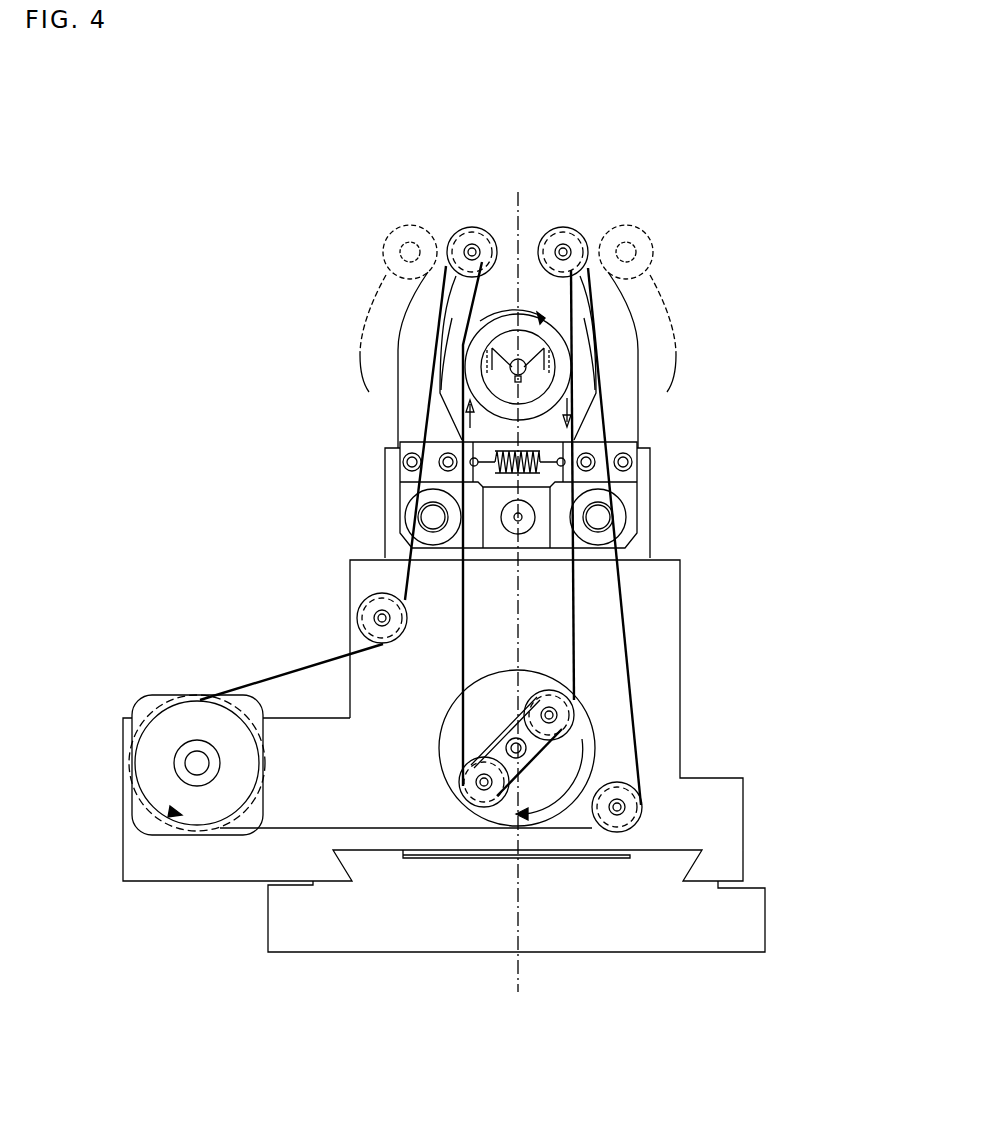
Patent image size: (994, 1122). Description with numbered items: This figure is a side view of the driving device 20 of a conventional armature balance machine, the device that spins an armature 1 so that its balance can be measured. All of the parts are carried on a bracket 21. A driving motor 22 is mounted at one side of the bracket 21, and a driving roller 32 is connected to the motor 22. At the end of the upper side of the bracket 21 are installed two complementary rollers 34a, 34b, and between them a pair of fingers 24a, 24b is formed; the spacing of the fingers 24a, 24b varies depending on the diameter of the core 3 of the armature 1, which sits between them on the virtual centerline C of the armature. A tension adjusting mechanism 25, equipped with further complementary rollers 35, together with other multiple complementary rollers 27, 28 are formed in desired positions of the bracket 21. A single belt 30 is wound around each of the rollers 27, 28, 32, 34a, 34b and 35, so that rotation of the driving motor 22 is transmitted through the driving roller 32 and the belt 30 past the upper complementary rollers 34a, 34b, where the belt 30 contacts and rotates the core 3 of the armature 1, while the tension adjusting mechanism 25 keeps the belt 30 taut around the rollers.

The armature 1 is at (612, 363).
The core 3 is at (557, 390).
The armature driving device 20 is at (243, 440).
The bracket 21 is at (367, 687).
The driving motor 22 is at (143, 710).
The finger 24a is at (415, 320).
The finger 24b is at (620, 328).
The tension adjusting mechanism 25 is at (643, 720).
The roller 27 is at (627, 815).
The roller 28 is at (367, 598).
The belt 30 is at (625, 645).
The roller 32 is at (200, 720).
The complementary roller 34a is at (472, 227).
The complementary roller 34b is at (580, 227).
The complementary rollers 35 is at (551, 715).
The virtual centerline C is at (520, 190).